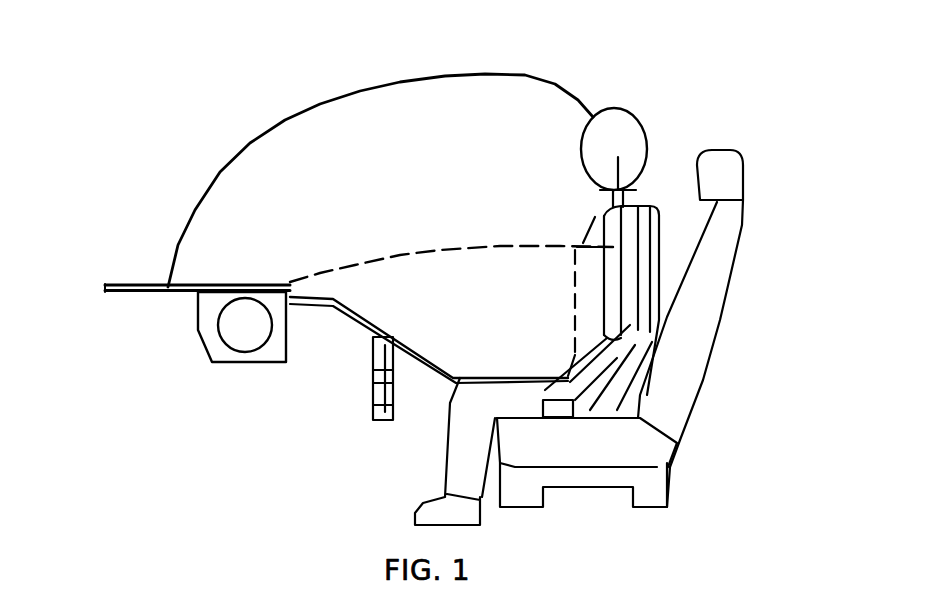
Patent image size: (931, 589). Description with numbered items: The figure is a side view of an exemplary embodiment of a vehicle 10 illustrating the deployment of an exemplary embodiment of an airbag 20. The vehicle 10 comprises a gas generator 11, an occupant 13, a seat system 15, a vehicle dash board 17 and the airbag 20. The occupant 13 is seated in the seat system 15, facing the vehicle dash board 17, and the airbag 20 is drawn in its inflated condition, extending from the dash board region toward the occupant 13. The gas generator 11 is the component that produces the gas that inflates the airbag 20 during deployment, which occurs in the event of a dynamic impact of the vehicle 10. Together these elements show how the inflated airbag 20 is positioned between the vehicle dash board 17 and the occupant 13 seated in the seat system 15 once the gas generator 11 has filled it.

The vehicle 10 is at (152, 84).
The gas generator 11 is at (250, 320).
The occupant 13 is at (627, 140).
The seat system 15 is at (697, 288).
The vehicle dash board 17 is at (363, 335).
The airbag 20 is at (595, 66).